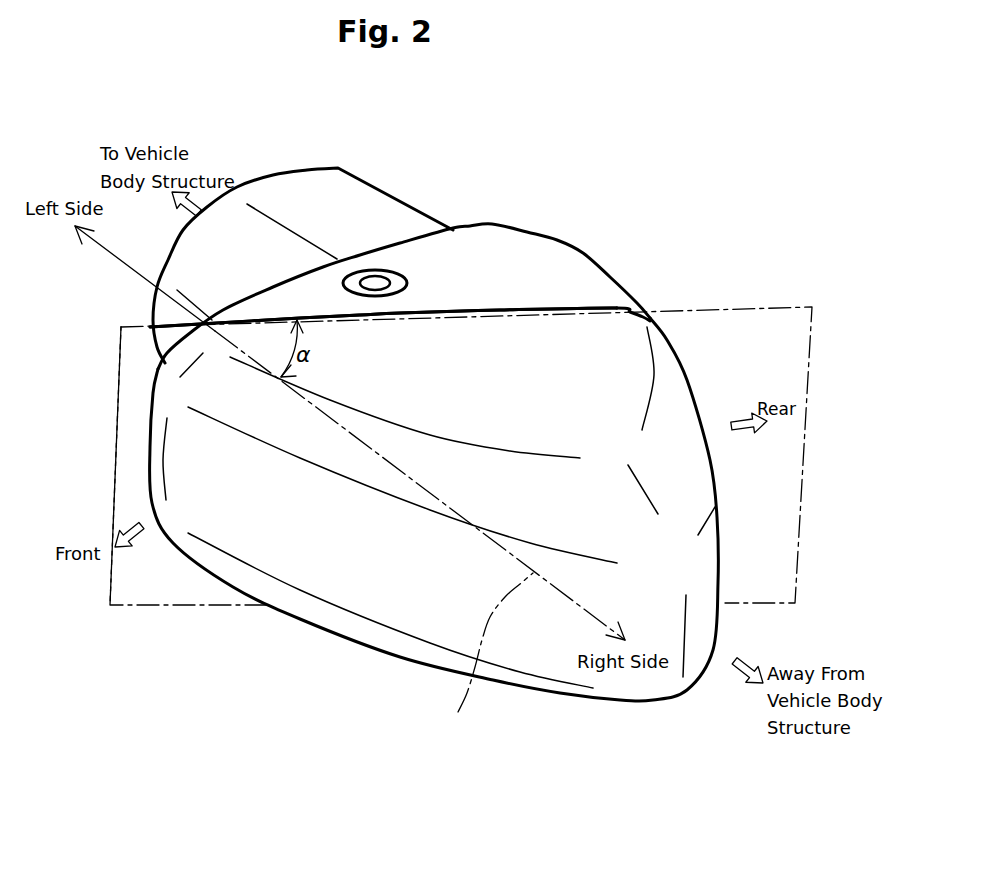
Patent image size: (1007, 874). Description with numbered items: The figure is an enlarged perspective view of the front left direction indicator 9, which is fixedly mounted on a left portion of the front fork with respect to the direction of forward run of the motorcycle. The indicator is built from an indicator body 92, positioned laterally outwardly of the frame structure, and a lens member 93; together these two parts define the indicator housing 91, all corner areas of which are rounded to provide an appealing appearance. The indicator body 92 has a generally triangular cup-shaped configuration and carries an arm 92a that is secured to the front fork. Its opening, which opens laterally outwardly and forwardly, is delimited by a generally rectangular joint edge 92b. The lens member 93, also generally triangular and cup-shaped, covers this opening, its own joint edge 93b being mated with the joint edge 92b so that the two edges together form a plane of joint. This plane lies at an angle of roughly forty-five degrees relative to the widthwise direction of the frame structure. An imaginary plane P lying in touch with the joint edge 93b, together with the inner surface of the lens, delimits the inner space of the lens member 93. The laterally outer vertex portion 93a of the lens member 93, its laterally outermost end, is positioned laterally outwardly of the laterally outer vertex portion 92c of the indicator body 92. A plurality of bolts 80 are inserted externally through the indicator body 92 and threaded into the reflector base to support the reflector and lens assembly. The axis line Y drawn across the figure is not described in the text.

The front left direction indicator 9 is at (115, 444).
The bolts 80 is at (380, 272).
The indicator housing 91 is at (770, 230).
The indicator body 92 is at (553, 251).
The arm 92a is at (318, 185).
The joint edge 92b is at (450, 310).
The laterally outer vertex portion 92c is at (652, 307).
The lens member 93 is at (668, 363).
The laterally outer vertex portion 93a is at (688, 595).
The joint edge 93b is at (450, 310).
The imaginary plane P is at (809, 355).
The pivot axis line Y is at (485, 657).